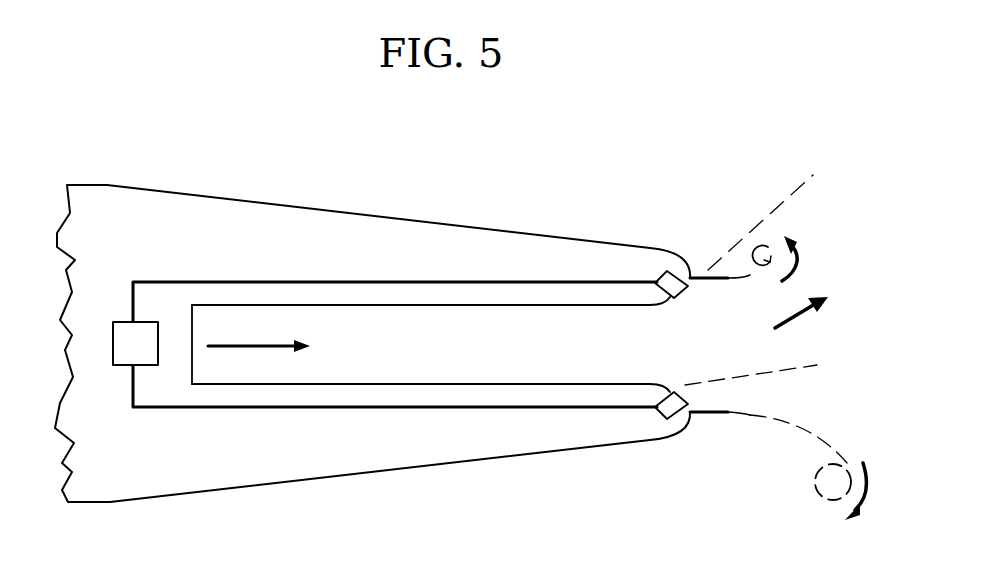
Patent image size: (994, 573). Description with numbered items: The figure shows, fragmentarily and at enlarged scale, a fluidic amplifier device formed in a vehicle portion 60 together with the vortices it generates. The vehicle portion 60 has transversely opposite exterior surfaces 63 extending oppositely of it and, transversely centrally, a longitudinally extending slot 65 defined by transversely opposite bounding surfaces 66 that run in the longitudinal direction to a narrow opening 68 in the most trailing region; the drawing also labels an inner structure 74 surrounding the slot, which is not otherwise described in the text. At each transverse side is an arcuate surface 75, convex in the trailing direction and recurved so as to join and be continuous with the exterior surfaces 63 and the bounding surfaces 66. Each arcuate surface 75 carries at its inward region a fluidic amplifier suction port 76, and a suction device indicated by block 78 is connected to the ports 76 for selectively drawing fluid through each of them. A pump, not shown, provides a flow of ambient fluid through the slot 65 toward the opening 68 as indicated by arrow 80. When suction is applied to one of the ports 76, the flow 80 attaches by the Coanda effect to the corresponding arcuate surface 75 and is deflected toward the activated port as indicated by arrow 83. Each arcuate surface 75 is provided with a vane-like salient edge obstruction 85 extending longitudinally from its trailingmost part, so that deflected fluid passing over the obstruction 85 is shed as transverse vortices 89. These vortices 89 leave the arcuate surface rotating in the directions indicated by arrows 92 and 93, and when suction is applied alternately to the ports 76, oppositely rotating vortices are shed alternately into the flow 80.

The vehicle portion 60 is at (493, 230).
The exterior surfaces 63 is at (125, 185).
The slot 65 is at (277, 375).
The bounding surfaces 66 is at (475, 383).
The narrow opening 68 is at (618, 343).
The outer housing wall 74 is at (228, 280).
The arcuate surface 75 is at (678, 300).
The fluidic amplifier suction port 76 is at (680, 293).
The suction device 78 is at (113, 348).
The fluid flow 80 is at (238, 348).
The deflected flow direction 83 is at (793, 320).
The salient edge obstruction 85 is at (695, 277).
The transverse vortices 89 is at (762, 244).
The vortex rotation arrow 92 is at (797, 270).
The vortex rotation arrow 93 is at (867, 462).